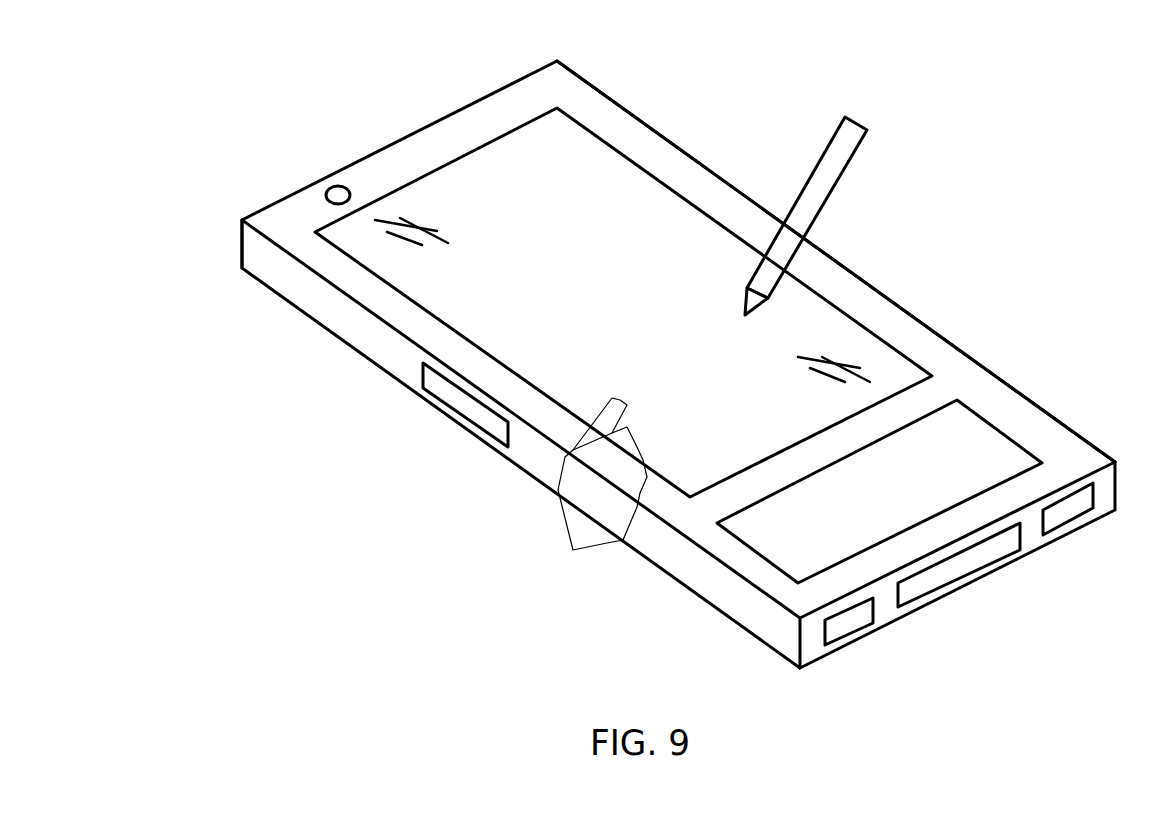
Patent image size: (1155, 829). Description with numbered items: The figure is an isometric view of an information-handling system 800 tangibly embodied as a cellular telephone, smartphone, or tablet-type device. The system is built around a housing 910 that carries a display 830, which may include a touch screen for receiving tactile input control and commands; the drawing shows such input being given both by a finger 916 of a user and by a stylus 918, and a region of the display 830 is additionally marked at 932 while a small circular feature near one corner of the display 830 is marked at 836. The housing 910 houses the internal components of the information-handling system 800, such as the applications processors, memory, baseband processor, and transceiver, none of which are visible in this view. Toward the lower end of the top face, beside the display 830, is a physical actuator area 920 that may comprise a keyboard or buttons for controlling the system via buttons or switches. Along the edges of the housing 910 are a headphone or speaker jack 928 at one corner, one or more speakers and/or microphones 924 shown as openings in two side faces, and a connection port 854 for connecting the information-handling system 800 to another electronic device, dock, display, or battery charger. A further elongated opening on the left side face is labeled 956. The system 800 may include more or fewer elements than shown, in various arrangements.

The information-handling system 800 is at (692, 98).
The housing 910 is at (497, 87).
The headphone or speaker jack 928 is at (267, 205).
The display 830 is at (559, 171).
The camera 836 is at (334, 185).
The stylus 918 is at (824, 155).
The touch input region 932 is at (652, 312).
The finger 916 is at (618, 400).
The physical actuator area 920 is at (968, 450).
The side slot 956 is at (440, 402).
The connection port 854 is at (973, 570).
The speakers and/or microphones 924 is at (1070, 522).